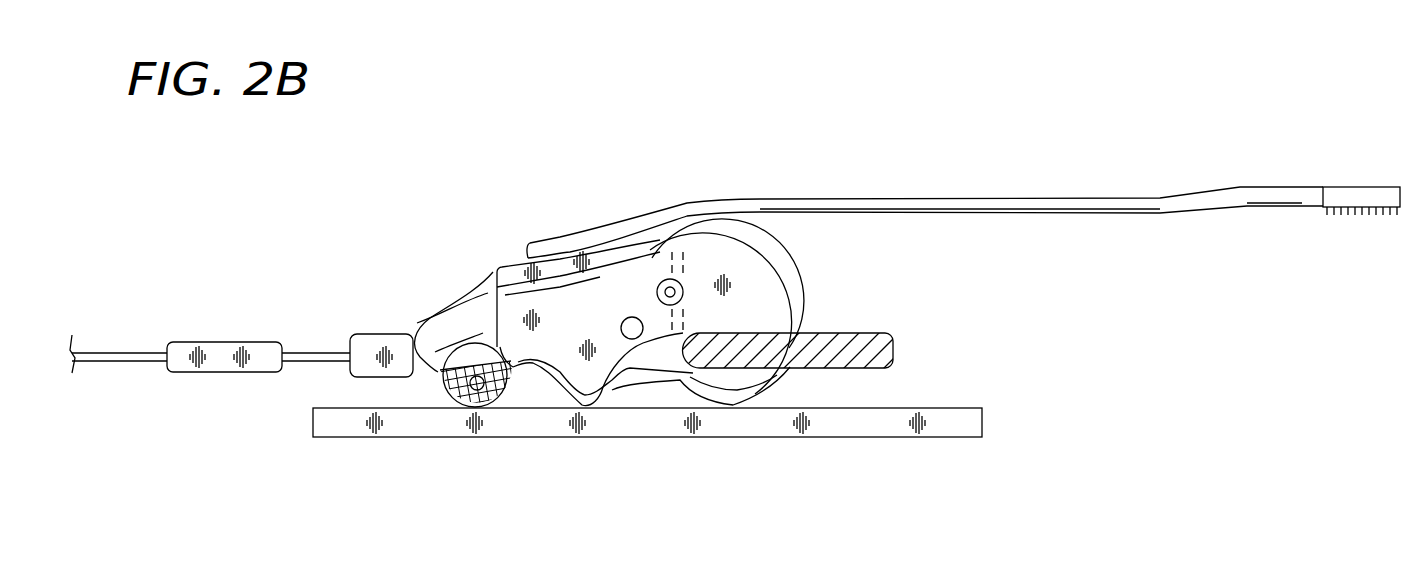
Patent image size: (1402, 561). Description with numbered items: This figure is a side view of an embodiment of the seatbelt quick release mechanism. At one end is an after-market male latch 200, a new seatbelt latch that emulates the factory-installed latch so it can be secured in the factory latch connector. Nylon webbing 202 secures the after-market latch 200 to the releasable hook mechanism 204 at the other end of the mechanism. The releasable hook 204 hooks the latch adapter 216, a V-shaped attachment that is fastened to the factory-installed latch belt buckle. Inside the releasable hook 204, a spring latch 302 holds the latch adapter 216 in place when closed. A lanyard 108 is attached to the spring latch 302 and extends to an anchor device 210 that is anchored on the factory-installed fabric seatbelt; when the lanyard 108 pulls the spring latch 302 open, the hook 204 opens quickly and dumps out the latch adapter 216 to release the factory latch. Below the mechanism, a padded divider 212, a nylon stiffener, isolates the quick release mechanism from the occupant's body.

The after-market male latch 200 is at (120, 355).
The nylon webbing 202 is at (317, 355).
The releasable hook mechanism 204 is at (765, 290).
The latch adapter 216 is at (893, 350).
The divider 212 is at (975, 422).
The spring latch 302 is at (638, 377).
The lanyard 108 is at (1103, 207).
The anchor device 210 is at (1368, 197).